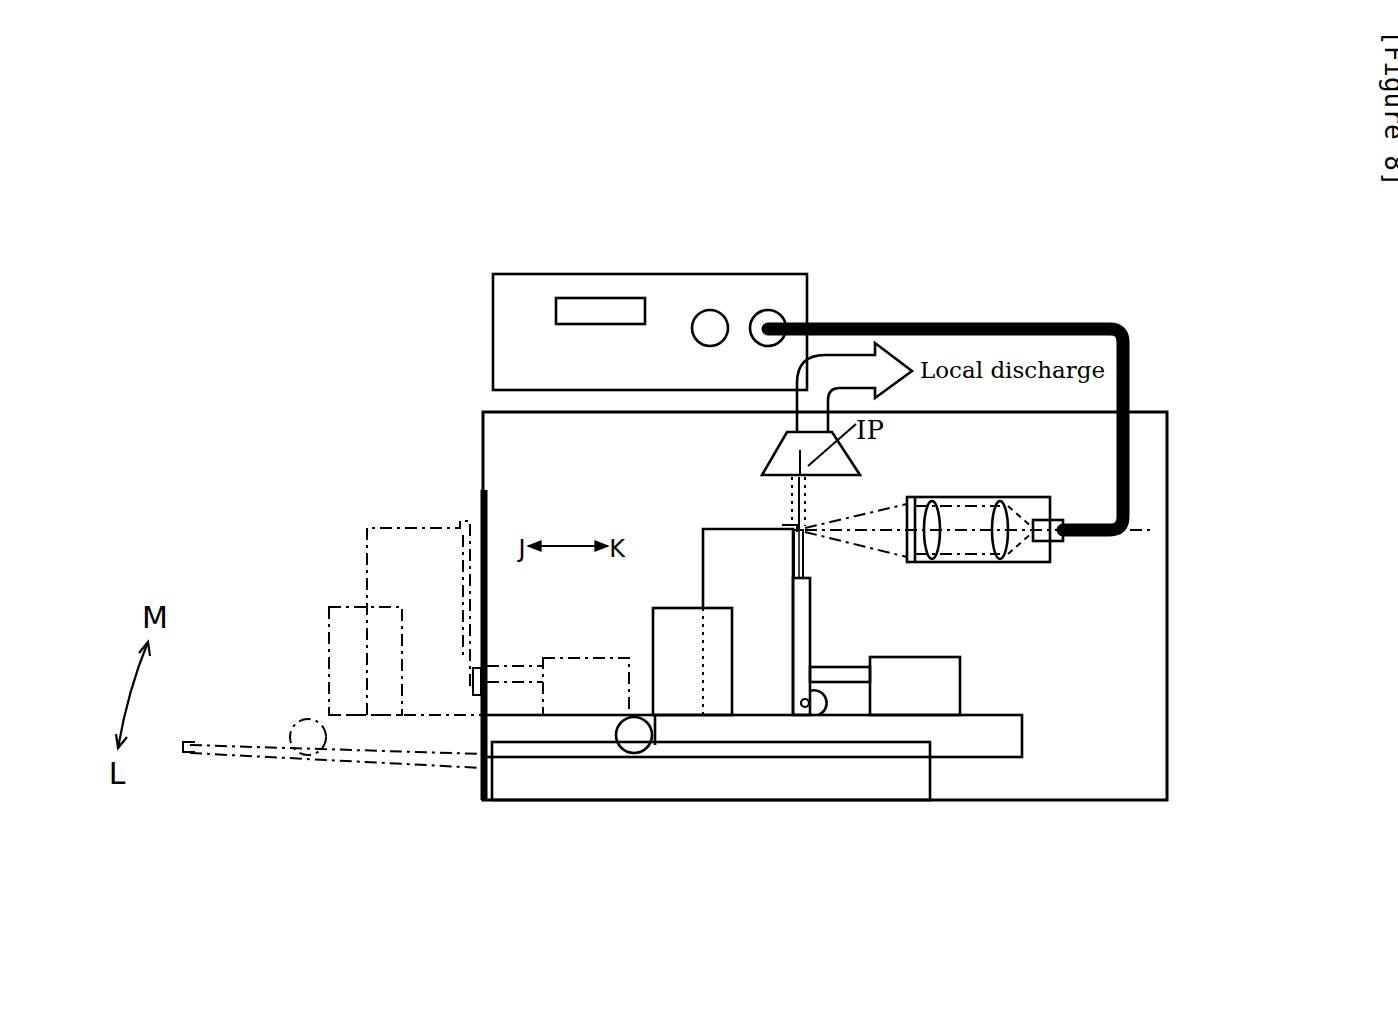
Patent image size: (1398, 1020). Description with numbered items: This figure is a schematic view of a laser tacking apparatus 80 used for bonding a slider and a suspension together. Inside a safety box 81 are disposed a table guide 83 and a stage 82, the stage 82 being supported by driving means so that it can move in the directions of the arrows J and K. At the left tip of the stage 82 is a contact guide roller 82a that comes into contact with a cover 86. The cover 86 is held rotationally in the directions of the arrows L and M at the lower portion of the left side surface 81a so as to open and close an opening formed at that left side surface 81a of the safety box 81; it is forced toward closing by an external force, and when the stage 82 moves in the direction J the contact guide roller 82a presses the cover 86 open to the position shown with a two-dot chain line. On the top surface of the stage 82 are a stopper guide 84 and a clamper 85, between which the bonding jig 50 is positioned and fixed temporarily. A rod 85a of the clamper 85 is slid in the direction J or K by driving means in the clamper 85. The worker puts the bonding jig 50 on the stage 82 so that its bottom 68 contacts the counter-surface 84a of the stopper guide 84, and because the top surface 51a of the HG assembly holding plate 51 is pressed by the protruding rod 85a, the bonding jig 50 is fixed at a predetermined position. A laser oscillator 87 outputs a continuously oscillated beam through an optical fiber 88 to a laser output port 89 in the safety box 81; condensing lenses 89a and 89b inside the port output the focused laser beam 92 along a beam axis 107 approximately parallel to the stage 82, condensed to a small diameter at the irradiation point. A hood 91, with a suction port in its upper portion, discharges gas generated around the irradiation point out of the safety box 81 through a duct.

The laser tacking apparatus 80 is at (953, 222).
The safety box 81 is at (1170, 580).
The left side surface 81a is at (483, 462).
The stage 82 is at (1000, 740).
The contact guide roller 82a is at (305, 742).
The table guide 83 is at (905, 777).
The stopper guide 84 is at (667, 635).
The counter-surface 84a is at (703, 640).
The clamper 85 is at (945, 695).
The rod 85a is at (841, 682).
The cover 86 is at (478, 500).
The laser oscillator 87 is at (679, 288).
The optical fiber 88 is at (1040, 320).
The laser output port 89 is at (1010, 531).
The condensing lens 89a is at (1013, 497).
The condensing lens 89b is at (945, 497).
The hood 91 is at (772, 457).
The focused laser beam 92 is at (866, 515).
The beam axis 107 is at (884, 535).
The bonding jig 50 is at (724, 545).
The HG assembly holding plate 51 is at (806, 617).
The top surface 51a is at (813, 628).
The bottom 68 is at (702, 571).